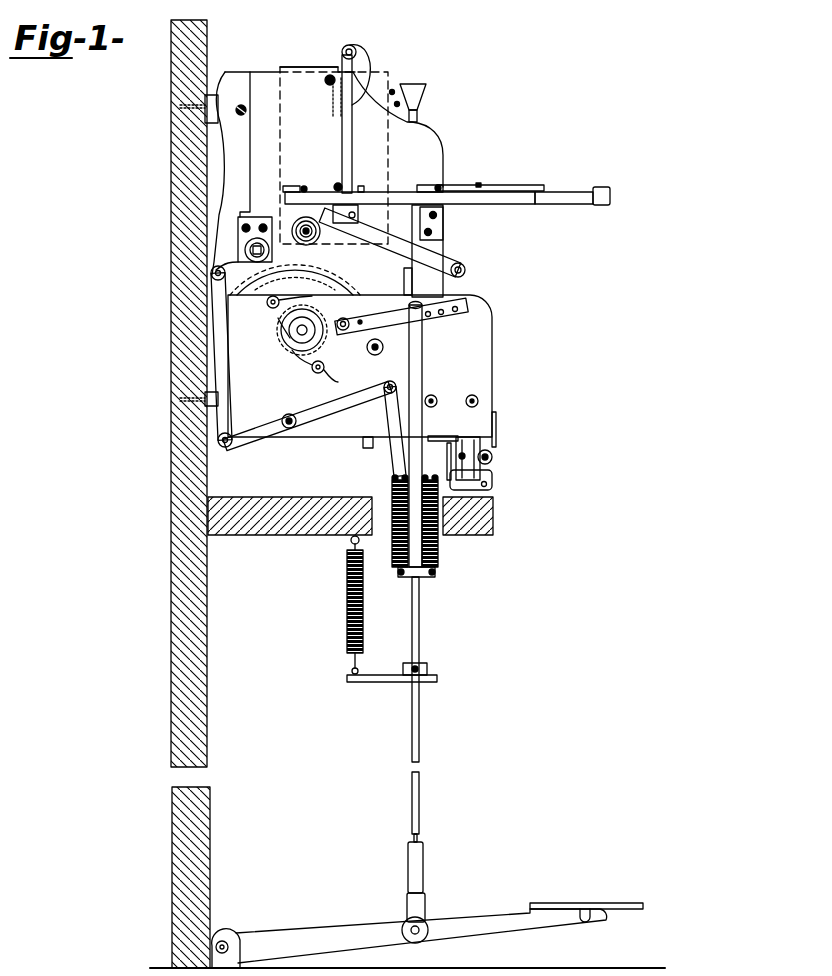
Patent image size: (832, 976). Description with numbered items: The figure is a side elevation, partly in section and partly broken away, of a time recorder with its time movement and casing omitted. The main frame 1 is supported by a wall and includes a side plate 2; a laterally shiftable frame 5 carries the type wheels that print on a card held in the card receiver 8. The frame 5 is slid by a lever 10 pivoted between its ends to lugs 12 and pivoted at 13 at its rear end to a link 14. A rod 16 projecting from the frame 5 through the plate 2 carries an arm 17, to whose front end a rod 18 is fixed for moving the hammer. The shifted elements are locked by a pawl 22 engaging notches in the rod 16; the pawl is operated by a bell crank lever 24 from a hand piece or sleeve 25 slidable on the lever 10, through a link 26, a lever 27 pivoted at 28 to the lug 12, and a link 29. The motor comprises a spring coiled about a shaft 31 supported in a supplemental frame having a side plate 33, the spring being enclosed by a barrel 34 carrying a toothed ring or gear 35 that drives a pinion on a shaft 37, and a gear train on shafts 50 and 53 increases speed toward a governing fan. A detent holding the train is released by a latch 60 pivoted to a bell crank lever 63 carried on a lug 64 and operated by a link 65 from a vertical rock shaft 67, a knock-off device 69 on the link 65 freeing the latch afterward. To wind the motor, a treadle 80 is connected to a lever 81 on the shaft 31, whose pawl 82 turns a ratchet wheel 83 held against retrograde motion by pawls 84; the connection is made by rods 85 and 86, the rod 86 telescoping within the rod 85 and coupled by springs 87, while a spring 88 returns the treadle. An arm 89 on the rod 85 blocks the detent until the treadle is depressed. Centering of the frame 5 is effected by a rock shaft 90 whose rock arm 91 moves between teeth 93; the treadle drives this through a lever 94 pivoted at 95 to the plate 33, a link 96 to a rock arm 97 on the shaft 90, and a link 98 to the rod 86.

The main frame 1 is at (237, 80).
The side plate 2 is at (334, 158).
The laterally shiftable frame 5 is at (293, 67).
The card receiver 8 is at (418, 117).
The lever 10 is at (470, 205).
The lugs 12 is at (432, 188).
The pivot 13 is at (290, 187).
The link 14 is at (306, 189).
The rod 16 is at (303, 243).
The arm 17 is at (440, 262).
The rod 18 is at (465, 268).
The pawl 22 is at (323, 226).
The bell crank lever 24 is at (338, 196).
The hand operated piece or sleeve 25 is at (569, 203).
The link 26 is at (505, 190).
The lever 27 is at (445, 186).
The pivot 28 is at (437, 186).
The link 29 is at (362, 190).
The shaft 31 is at (296, 334).
The side plate 33 is at (490, 343).
The barrel 34 is at (330, 283).
The toothed ring or gear 35 is at (350, 291).
The shaft 37 is at (372, 354).
The shaft 50 is at (433, 396).
The shaft 53 is at (471, 395).
The latch 60 is at (466, 437).
The bell crank lever 63 is at (479, 464).
The lug 64 is at (497, 440).
The link 65 is at (491, 478).
The rock shaft 67 is at (415, 276).
The knock-off device 69 is at (448, 458).
The treadle 80 is at (578, 904).
The lever 81 is at (436, 316).
The pawl 82 is at (338, 333).
The ratchet wheel 83 is at (285, 329).
The pawls 84 is at (278, 307).
The rod 85 is at (423, 357).
The rod 86 is at (420, 625).
The springs 87 is at (392, 553).
The spring 88 is at (346, 600).
The arm 89 is at (427, 436).
The rock shaft 90 is at (248, 257).
The rock arm 91 is at (243, 229).
The teeth 93 is at (258, 221).
The lever 94 is at (261, 444).
The pivot 95 is at (289, 428).
The link 96 is at (233, 380).
The rock arm 97 is at (230, 268).
The link 98 is at (394, 455).